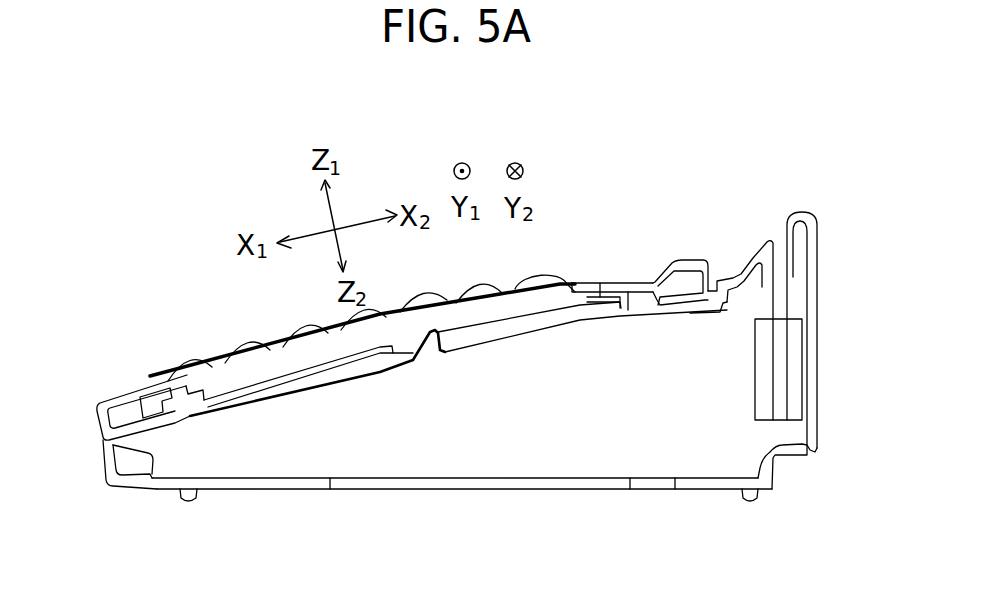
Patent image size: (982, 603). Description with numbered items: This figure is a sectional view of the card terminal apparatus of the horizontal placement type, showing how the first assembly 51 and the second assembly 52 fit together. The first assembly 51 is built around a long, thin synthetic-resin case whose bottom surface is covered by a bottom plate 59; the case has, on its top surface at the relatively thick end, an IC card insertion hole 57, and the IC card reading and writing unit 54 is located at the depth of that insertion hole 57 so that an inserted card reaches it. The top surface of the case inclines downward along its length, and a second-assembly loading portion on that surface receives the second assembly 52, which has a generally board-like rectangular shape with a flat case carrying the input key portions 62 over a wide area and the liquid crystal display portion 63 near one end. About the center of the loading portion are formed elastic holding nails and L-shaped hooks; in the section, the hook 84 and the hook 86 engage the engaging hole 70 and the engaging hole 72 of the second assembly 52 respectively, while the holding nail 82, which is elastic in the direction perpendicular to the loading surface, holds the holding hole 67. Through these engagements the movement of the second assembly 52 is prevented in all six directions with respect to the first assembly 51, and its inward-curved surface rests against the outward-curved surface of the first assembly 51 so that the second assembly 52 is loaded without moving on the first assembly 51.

The first assembly 51 is at (118, 492).
The second assembly 52 is at (105, 393).
The IC card reading and writing unit 54 is at (797, 347).
The IC card insertion hole 57 is at (778, 247).
The bottom plate 59 is at (260, 490).
The input key portions 62 is at (237, 347).
The liquid crystal display portion 63 is at (630, 280).
The holding hole 67 is at (436, 340).
The engaging hole 70 is at (637, 310).
The engaging hole 72 is at (173, 417).
The holding nail 82 is at (430, 337).
The hook 84 is at (603, 297).
The hook 86 is at (152, 400).